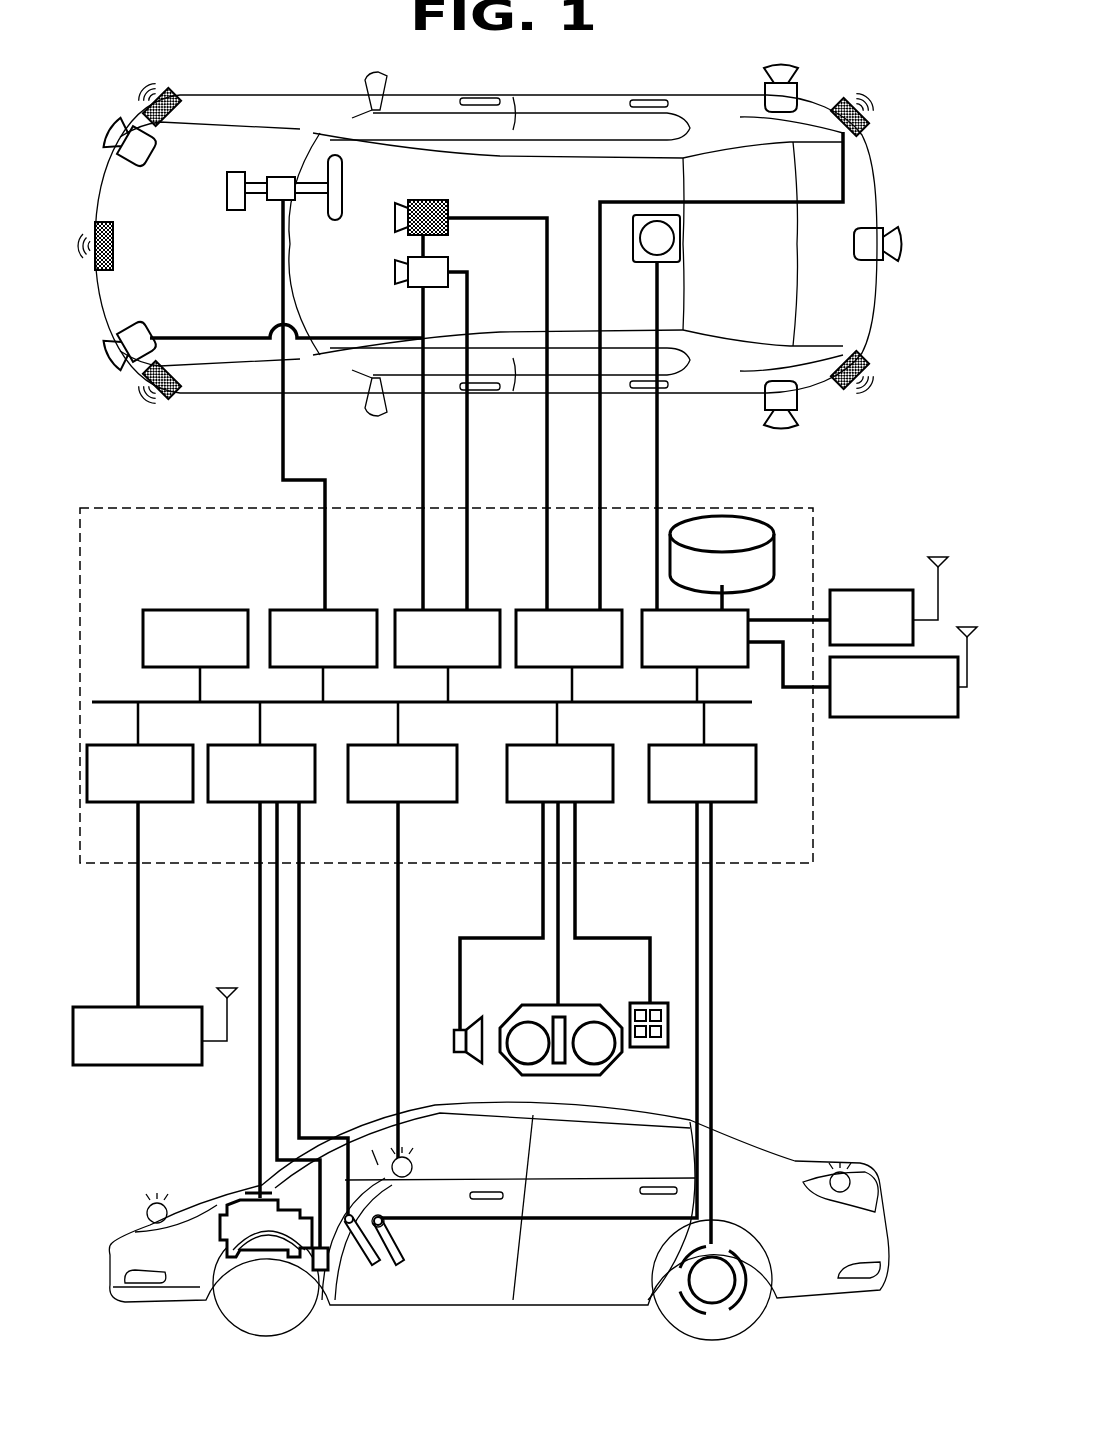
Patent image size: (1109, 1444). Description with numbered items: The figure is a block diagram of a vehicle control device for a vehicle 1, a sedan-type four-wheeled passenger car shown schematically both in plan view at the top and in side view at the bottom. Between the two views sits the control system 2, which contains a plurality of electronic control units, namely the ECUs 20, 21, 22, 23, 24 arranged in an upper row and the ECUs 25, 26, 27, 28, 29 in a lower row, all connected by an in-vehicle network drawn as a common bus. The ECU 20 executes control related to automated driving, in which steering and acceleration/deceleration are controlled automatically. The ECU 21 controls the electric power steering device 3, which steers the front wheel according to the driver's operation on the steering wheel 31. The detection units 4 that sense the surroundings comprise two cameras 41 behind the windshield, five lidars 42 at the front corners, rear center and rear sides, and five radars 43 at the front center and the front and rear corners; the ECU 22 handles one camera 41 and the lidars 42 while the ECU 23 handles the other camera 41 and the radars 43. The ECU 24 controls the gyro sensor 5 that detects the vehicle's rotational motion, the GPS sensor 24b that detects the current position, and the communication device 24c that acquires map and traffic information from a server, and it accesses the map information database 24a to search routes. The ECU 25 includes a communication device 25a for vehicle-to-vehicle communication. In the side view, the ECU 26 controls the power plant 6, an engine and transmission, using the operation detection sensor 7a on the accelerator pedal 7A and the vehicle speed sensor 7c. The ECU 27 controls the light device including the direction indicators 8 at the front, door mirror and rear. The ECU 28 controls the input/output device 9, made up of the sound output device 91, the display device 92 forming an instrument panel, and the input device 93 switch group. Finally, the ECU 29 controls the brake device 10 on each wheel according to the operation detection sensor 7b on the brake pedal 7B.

The vehicle 1 is at (892, 152).
The control system 2 is at (790, 880).
The electric power steering device 3 is at (237, 212).
The steering wheel 31 is at (335, 222).
The external sensor group 4 is at (123, 101).
The camera 41 is at (450, 222).
The lidar 42 is at (150, 170).
The millimeter-wave radar 43 is at (168, 125).
The gyro sensor 5 is at (683, 238).
The power plant 6 is at (222, 1198).
The operation detection sensor 7a is at (372, 1150).
The accelerator pedal 7A is at (385, 1262).
The operation detection sensor 7b is at (386, 1217).
The brake pedal 7B is at (407, 1256).
The vehicle speed sensor 7c is at (318, 1272).
The direction indicator 8 is at (147, 1210).
The input/output device 9 is at (488, 1080).
The sound output device 91 is at (453, 1035).
The display device 92 is at (512, 1014).
The input device 93 is at (648, 1047).
The brake device 10 is at (714, 1303).
The ECU 20 is at (225, 608).
The ECU 21 is at (350, 608).
The ECU 22 is at (443, 608).
The ECU 23 is at (568, 608).
The ECU 24 is at (630, 608).
The map information database 24a is at (725, 513).
The GPS sensor 24b is at (885, 588).
The communication device 24c is at (878, 719).
The ECU 25 is at (160, 803).
The communication device 25a is at (138, 1067).
The ECU 26 is at (220, 803).
The ECU 27 is at (425, 803).
The ECU 28 is at (592, 803).
The ECU 29 is at (730, 803).